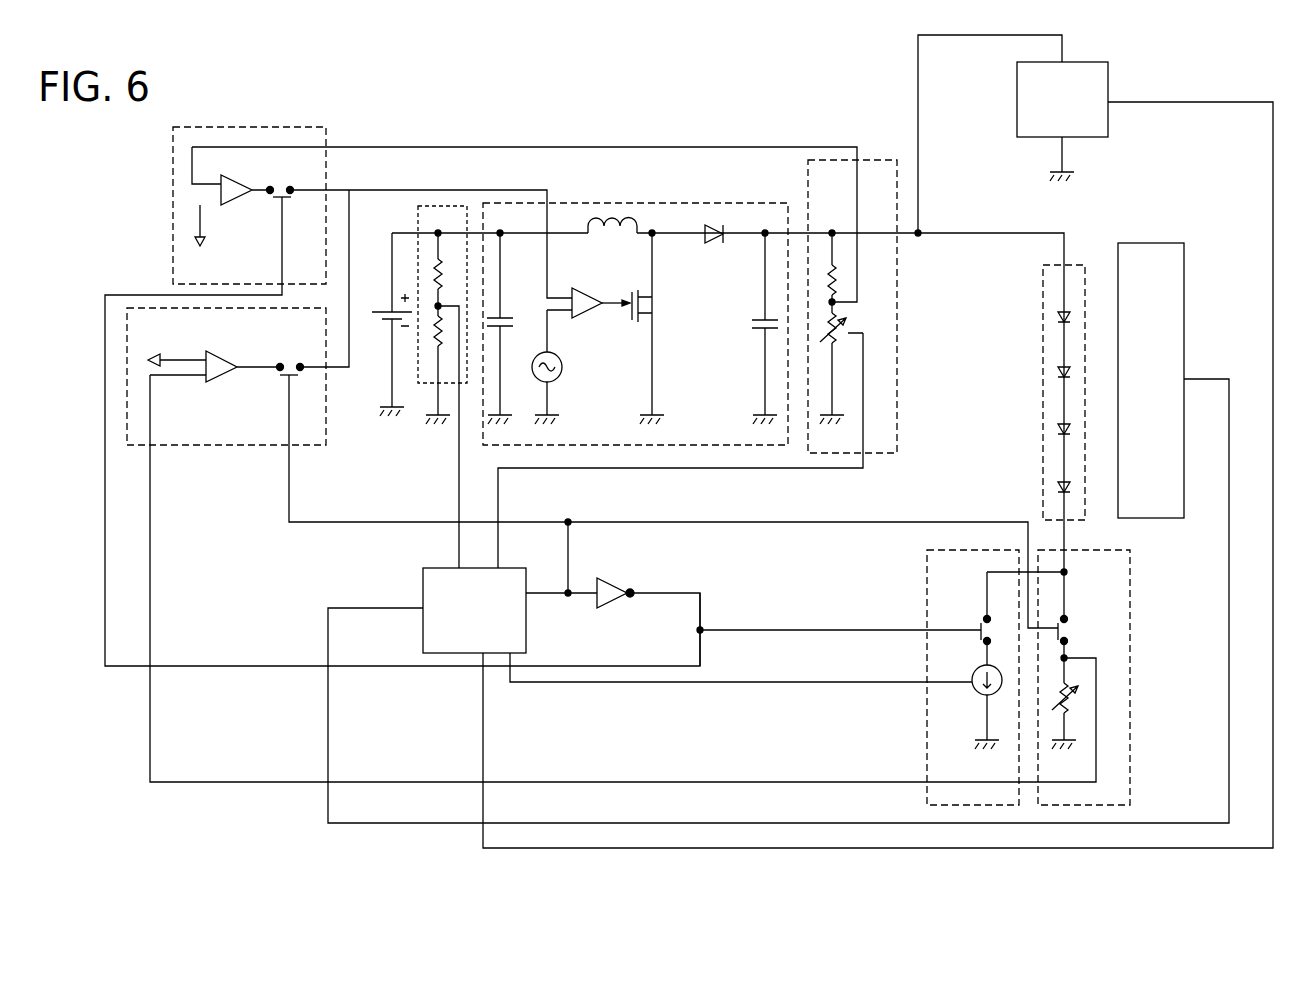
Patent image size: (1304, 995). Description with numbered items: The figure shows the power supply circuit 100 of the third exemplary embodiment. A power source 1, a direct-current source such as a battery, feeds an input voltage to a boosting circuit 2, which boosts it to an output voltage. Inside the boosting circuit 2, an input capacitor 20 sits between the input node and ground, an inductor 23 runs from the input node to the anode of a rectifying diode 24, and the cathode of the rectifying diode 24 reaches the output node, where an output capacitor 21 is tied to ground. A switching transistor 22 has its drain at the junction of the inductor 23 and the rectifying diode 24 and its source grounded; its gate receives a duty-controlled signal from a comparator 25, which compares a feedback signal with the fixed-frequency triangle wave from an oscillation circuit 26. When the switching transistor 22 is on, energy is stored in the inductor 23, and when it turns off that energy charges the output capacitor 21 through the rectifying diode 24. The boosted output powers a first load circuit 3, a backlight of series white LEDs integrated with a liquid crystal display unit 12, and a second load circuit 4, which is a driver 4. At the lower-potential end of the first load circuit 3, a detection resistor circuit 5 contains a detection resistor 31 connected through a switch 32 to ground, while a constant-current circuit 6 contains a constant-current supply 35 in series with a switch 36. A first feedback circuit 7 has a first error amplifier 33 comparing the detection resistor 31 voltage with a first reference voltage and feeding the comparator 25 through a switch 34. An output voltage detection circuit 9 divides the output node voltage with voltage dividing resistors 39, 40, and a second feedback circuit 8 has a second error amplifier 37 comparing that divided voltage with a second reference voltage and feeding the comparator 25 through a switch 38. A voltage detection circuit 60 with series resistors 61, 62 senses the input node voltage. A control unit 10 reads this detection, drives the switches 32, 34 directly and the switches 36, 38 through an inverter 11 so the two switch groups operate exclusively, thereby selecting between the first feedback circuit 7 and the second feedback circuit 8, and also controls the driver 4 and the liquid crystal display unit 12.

The power source 1 is at (383, 308).
The boosting circuit 2 is at (610, 203).
The first load circuit 3 is at (1073, 265).
The second load circuit (driver) 4 is at (1017, 98).
The detection resistor circuit 5 is at (1130, 584).
The constant-current circuit 6 is at (927, 572).
The first feedback circuit 7 is at (222, 446).
The second feedback circuit 8 is at (222, 127).
The output voltage detection circuit 9 is at (882, 159).
The control unit 10 is at (422, 590).
The inverter 11 is at (612, 583).
The liquid crystal display unit 12 is at (1150, 243).
The input capacitor 20 is at (508, 317).
The output capacitor 21 is at (756, 333).
The switching transistor 22 is at (645, 308).
The inductor 23 is at (606, 226).
The rectifying diode 24 is at (711, 244).
The comparator 25 is at (588, 293).
The oscillation circuit 26 is at (562, 370).
The detection resistor 31 is at (1078, 698).
The switch (first switch) 32 is at (1068, 628).
The first error amplifier 33 is at (222, 356).
The switch (third switch) 34 is at (288, 362).
The constant-current supply 35 is at (976, 668).
The switch (second switch) 36 is at (982, 619).
The second error amplifier 37 is at (236, 181).
The switch (fourth switch) 38 is at (287, 200).
The voltage dividing resistor 39 is at (839, 281).
The voltage dividing resistor 40 is at (848, 323).
The voltage detection circuit 60 is at (440, 206).
The resistor 61 is at (434, 268).
The resistor 62 is at (424, 338).
The power supply circuit 100 is at (271, 836).